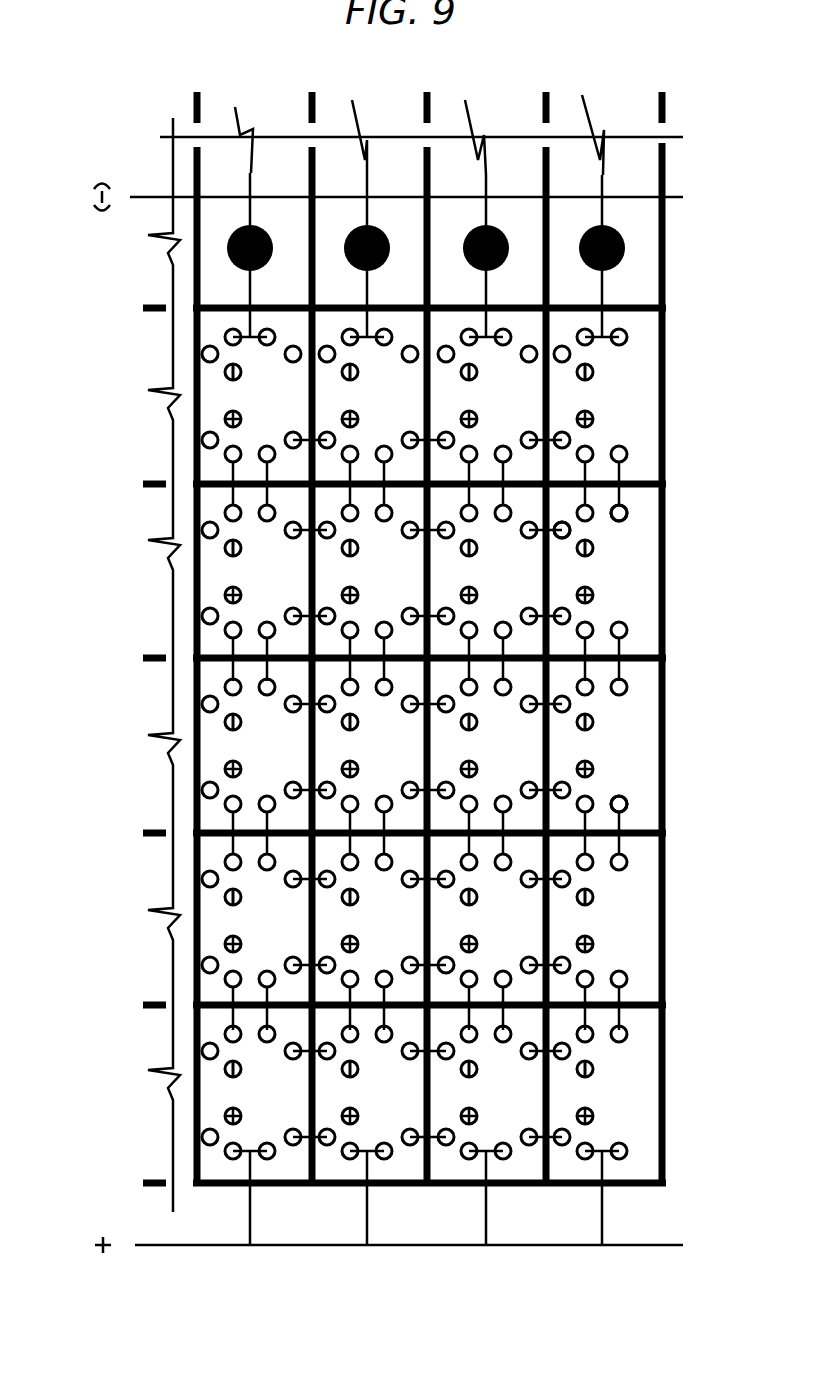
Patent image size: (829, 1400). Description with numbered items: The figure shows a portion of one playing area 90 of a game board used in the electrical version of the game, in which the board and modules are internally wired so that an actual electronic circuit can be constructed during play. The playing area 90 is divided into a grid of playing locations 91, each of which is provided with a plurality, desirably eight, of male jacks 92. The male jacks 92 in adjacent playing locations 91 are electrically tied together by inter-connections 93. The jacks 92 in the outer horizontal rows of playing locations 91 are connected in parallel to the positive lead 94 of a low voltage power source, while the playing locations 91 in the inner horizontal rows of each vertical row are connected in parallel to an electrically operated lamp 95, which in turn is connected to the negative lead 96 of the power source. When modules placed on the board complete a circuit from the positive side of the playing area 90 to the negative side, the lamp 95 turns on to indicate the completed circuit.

The playing area 90 is at (677, 367).
The playing location 91 is at (640, 1077).
The male jack 92 is at (386, 332).
The inter-connection 93 is at (553, 530).
The positive lead 94 is at (150, 1240).
The lamp 95 is at (348, 243).
The negative lead 96 is at (220, 197).